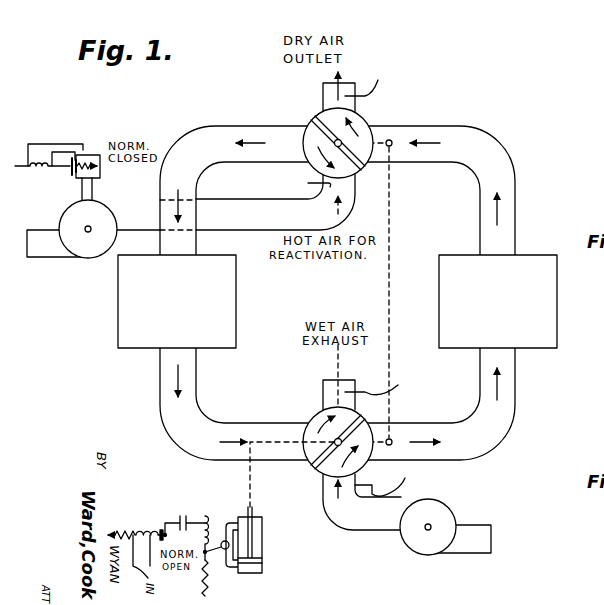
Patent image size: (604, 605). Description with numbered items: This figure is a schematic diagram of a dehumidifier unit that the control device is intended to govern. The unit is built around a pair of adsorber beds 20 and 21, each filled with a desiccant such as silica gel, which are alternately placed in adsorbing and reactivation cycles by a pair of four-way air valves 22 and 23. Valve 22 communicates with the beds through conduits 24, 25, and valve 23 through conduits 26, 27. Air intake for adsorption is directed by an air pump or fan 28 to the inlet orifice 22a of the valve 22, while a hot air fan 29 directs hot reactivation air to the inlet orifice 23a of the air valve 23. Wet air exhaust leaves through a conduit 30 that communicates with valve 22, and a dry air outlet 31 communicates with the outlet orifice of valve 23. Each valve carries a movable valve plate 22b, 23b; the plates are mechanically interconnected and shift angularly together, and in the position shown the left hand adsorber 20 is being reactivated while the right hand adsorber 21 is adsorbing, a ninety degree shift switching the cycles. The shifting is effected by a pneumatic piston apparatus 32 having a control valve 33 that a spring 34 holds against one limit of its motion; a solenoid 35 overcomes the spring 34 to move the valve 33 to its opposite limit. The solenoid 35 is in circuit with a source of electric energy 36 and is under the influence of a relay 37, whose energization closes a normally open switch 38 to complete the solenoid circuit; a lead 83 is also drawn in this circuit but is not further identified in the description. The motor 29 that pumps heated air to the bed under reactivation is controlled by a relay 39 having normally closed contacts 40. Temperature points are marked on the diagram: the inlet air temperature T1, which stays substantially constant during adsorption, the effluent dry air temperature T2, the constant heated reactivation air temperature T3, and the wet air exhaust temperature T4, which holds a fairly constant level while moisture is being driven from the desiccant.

The adsorber bed 20 is at (128, 275).
The adsorber bed 21 is at (550, 268).
The four-way air valve 22 is at (335, 451).
The inlet orifice 22a is at (330, 478).
The valve plate 22b is at (316, 455).
The four-way air valve 23 is at (333, 135).
The inlet orifice 23a is at (350, 173).
The valve plate 23b is at (312, 120).
The conduit 24 is at (185, 431).
The conduit 25 is at (503, 414).
The conduit 26 is at (191, 141).
The conduit 27 is at (478, 150).
The air pump or fan 28 is at (448, 512).
The hot air fan 29 is at (60, 218).
The conduit 30 is at (323, 388).
The dry air outlet 31 is at (323, 88).
The pneumatic piston apparatus 32 is at (265, 549).
The control valve 33 is at (228, 540).
The spring 34 is at (209, 585).
The solenoid 35 is at (203, 517).
The source of electric energy 36 is at (183, 516).
The relay 37 is at (136, 524).
The normally open switch 38 is at (166, 540).
The relay 39 is at (42, 173).
The normally closed contacts 40 is at (70, 173).
The input leads 83 is at (150, 562).
The inlet air temperature T1 is at (411, 481).
The effluent temperature T2 is at (395, 82).
The reactivation air temperature T3 is at (309, 187).
The wet air exhaust temperature T4 is at (396, 387).